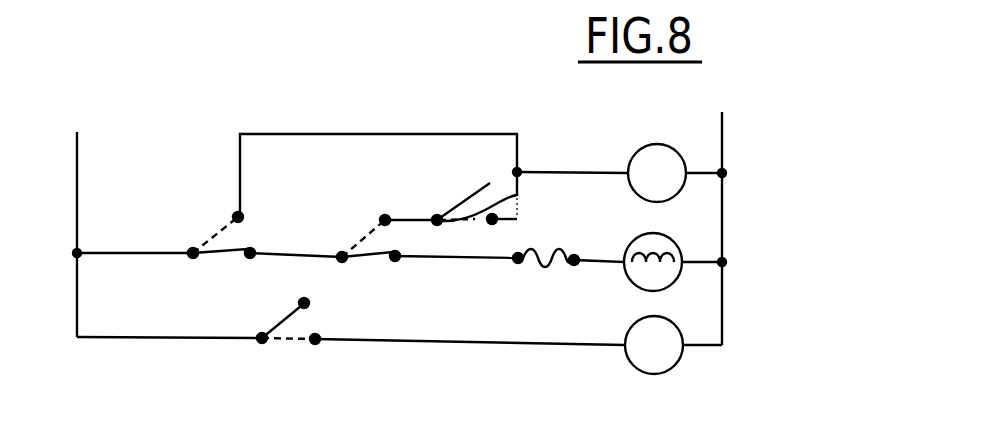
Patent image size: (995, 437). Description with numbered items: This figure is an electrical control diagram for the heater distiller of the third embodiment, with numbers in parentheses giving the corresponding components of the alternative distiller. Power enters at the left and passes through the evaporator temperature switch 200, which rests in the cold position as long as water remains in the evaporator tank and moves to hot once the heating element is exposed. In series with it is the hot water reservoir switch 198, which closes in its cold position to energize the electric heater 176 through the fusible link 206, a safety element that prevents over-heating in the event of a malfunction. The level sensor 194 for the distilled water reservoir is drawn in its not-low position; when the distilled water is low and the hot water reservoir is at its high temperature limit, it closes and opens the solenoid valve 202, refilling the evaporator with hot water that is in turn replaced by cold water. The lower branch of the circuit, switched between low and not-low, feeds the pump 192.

The evaporator temperature switch 200 is at (193, 250).
The hot water reservoir switch 198 is at (342, 254).
The level sensor 194 is at (518, 192).
The solenoid valve 202 is at (710, 112).
The electric heater 176 is at (676, 246).
The fusible link 206 is at (518, 263).
The pump 192 is at (542, 343).